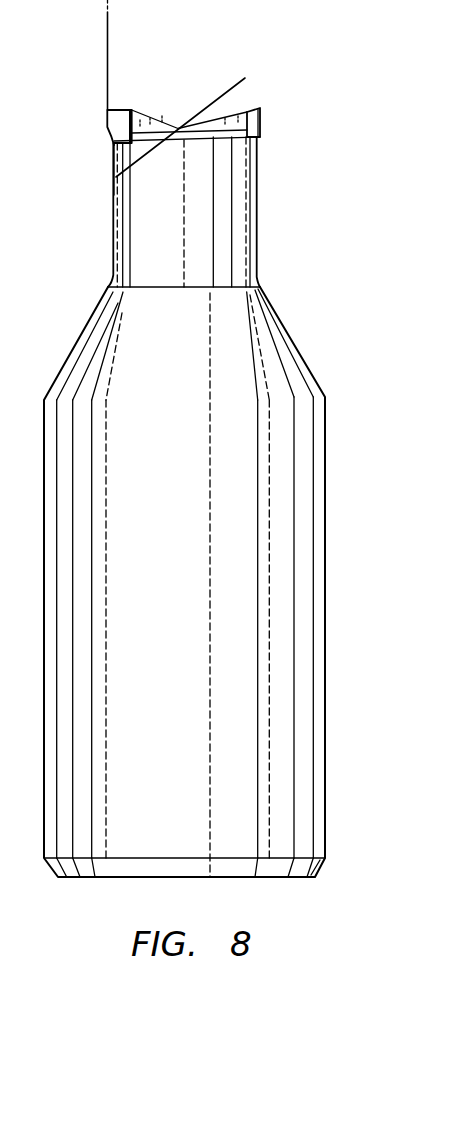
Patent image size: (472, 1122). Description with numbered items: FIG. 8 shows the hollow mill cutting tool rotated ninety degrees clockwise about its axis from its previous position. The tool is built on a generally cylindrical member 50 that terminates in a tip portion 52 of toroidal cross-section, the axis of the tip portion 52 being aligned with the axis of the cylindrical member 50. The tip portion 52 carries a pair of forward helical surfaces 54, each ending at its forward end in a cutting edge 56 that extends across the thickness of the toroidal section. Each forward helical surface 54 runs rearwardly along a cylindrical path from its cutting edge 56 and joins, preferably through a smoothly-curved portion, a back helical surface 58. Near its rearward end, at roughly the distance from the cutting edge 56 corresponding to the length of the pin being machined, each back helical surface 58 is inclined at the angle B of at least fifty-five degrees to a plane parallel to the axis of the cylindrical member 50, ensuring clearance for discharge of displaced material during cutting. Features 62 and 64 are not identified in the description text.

The cylindrical member 50 is at (376, 546).
The tip portion 52 is at (260, 287).
The forward helical surface 54 is at (218, 110).
The cutting edge 56 is at (121, 110).
The back helical surface 58 is at (114, 162).
The flange side edge 62 is at (261, 113).
The rim 64 is at (260, 133).
The angle beta B is at (215, 101).